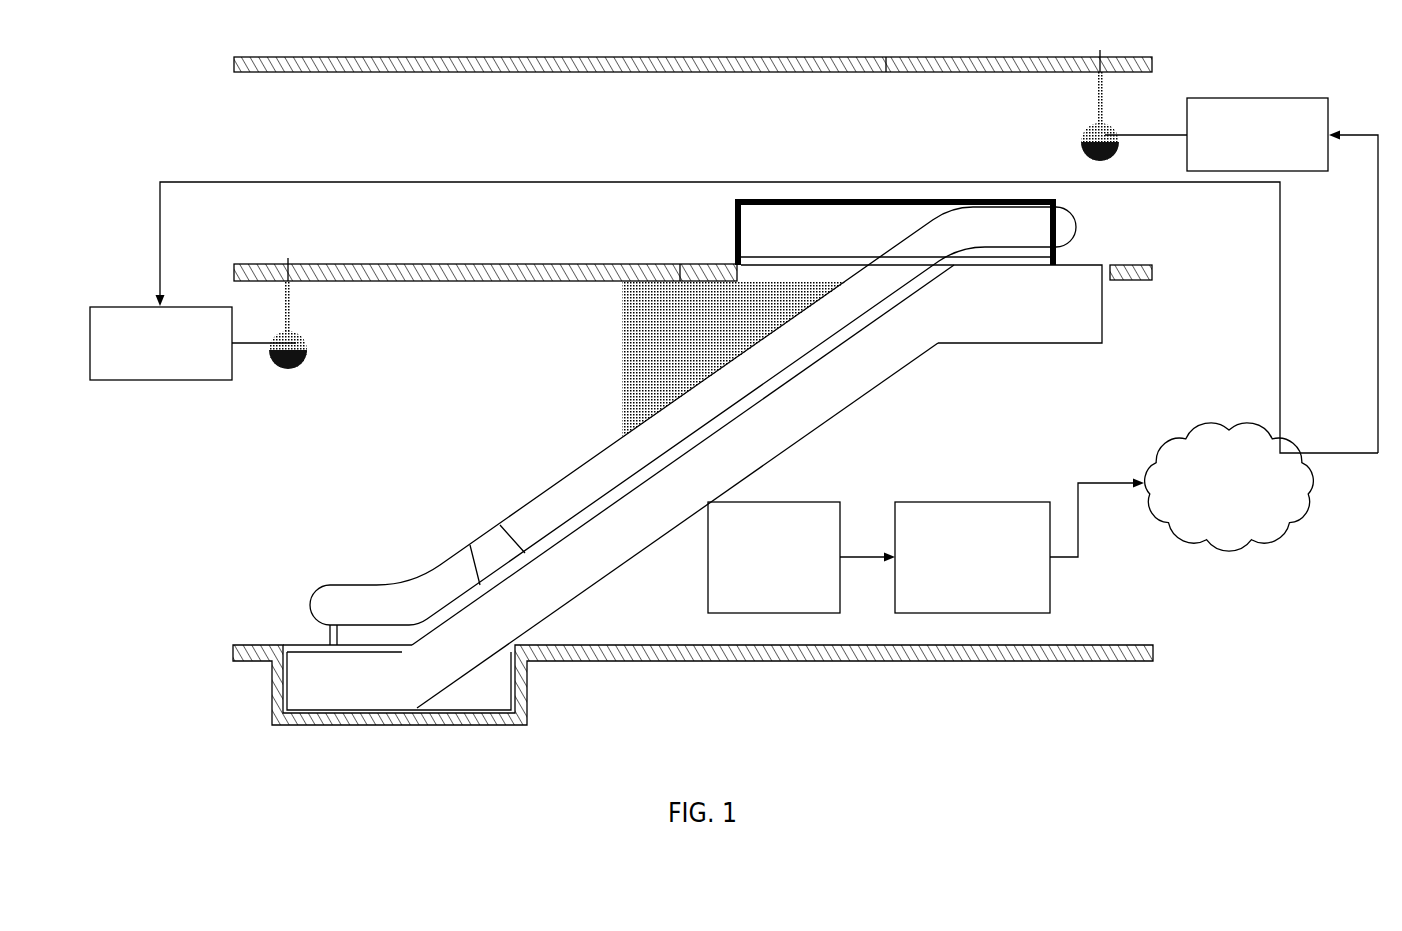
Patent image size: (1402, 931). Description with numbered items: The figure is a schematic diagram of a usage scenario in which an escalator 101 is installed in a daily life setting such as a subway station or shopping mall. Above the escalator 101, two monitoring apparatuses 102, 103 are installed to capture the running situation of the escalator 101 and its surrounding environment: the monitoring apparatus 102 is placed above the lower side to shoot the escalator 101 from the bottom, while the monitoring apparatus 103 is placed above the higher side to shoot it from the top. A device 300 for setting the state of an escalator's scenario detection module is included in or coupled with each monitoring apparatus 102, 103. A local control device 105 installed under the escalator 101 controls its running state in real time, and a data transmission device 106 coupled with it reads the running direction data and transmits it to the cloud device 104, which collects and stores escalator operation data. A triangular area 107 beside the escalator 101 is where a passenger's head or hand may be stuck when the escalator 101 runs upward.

The escalator 101 is at (692, 455).
The monitoring apparatus 102 is at (287, 333).
The monitoring apparatus 103 is at (1075, 105).
The cloud device 104 is at (1229, 487).
The local control device 105 is at (774, 557).
The data transmission device 106 is at (972, 557).
The triangular area 107 is at (734, 359).
The device for setting the state of an escalator's scenario detection module 300 is at (709, 239).